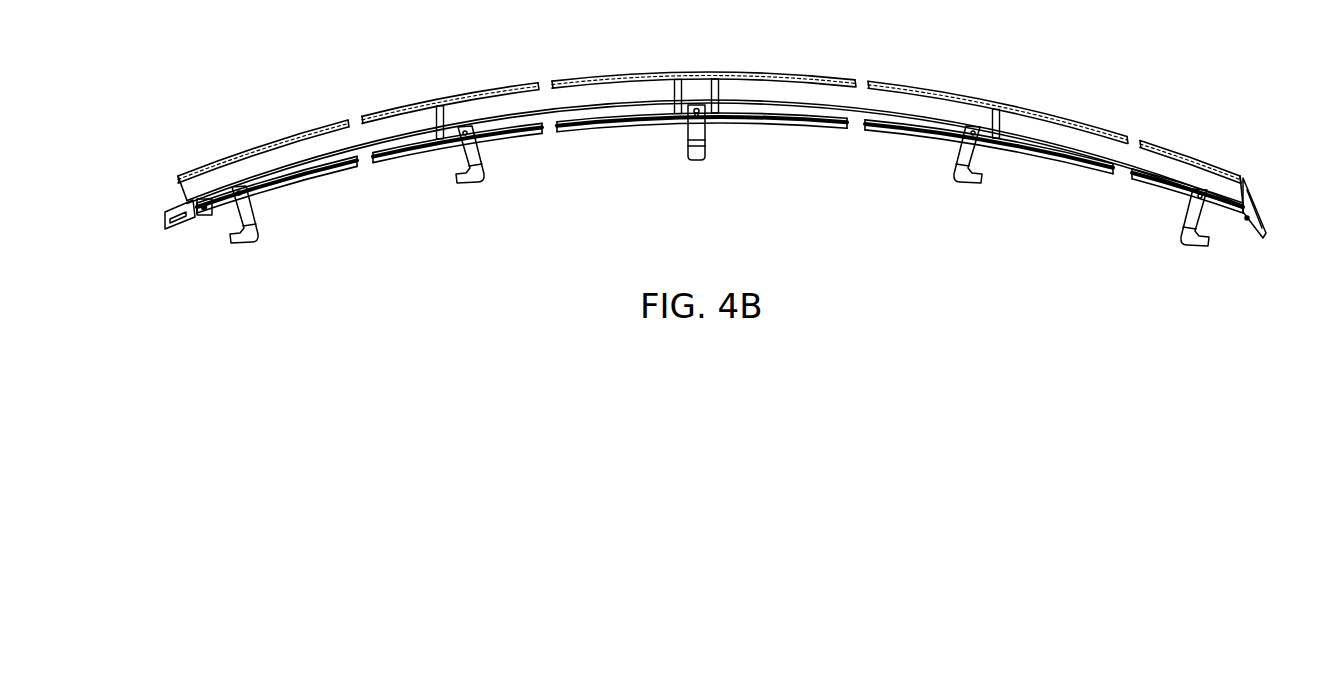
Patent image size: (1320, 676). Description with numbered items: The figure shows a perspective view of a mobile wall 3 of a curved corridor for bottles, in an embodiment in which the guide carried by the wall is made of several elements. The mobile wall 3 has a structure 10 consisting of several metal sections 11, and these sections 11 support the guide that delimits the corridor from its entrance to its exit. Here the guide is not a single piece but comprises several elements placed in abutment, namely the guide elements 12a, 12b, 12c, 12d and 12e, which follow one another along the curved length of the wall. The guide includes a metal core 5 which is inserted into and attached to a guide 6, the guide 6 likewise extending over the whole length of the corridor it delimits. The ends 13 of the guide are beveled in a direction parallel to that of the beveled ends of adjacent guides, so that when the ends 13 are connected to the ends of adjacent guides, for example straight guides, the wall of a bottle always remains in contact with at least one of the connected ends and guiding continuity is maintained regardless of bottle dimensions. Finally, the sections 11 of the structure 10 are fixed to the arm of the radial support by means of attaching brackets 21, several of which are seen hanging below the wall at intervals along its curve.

The mobile wall 3 is at (894, 81).
The metal core 5 is at (1150, 153).
The guide 6 is at (1083, 120).
The structure 10 is at (636, 89).
The metal sections 11 is at (289, 150).
The guide element 12a is at (229, 157).
The guide element 12b is at (418, 99).
The guide element 12c is at (767, 75).
The guide element 12d is at (953, 87).
The guide element 12e is at (1187, 148).
The ends of the guides 13 is at (180, 193).
The attaching brackets 21 is at (248, 210).